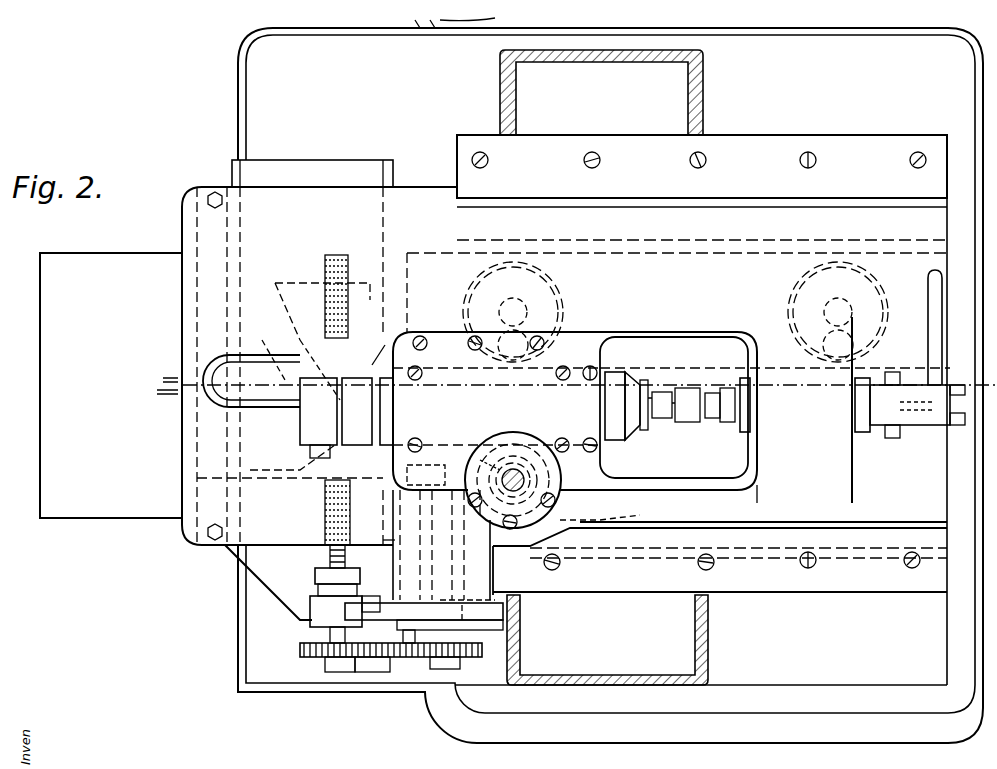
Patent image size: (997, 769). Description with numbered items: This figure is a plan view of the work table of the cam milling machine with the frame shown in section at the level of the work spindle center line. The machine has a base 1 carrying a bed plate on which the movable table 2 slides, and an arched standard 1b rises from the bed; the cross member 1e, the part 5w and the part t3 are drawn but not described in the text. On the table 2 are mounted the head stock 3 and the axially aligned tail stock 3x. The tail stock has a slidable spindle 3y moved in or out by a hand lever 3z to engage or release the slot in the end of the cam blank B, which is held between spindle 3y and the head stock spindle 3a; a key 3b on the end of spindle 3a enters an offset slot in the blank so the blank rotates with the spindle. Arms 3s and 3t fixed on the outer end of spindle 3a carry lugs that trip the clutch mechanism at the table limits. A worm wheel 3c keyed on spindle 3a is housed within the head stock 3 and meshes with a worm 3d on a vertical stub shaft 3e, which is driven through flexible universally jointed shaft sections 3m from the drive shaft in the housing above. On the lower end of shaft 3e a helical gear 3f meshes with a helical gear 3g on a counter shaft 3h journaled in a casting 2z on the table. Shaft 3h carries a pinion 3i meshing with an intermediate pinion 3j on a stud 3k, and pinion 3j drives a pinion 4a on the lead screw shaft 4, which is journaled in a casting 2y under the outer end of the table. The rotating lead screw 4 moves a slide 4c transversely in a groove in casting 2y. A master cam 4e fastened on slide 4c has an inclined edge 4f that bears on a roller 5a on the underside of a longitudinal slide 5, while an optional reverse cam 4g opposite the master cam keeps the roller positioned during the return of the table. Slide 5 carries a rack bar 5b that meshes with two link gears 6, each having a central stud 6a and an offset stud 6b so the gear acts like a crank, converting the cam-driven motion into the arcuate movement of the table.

The base 1 is at (610, 380).
The standard 1b is at (704, 72).
The cross bar 1e is at (677, 410).
The movable table 2 is at (165, 482).
The casting 2y is at (290, 602).
The casting 2z is at (393, 545).
The head stock 3 is at (568, 340).
The spindle 3a is at (660, 392).
The key 3b is at (683, 392).
The worm wheel 3c is at (575, 392).
The worm 3d is at (482, 458).
The vertical stub shaft 3e is at (525, 482).
The helical gear 3f is at (600, 514).
The helical gear 3g is at (421, 469).
The counter shaft 3h is at (468, 578).
The pinion 3i is at (470, 650).
The intermediate pinion 3j is at (405, 660).
The stud 3k is at (375, 674).
The flexible universally jointed shaft sections 3m is at (325, 530).
The arm 3s is at (387, 338).
The arm 3t is at (300, 415).
The tail stock 3x is at (804, 410).
The slidable spindle 3y is at (742, 432).
The hand lever 3z is at (940, 368).
The lead screw shaft 4 is at (340, 258).
The pinion 4a is at (300, 650).
The slide 4c is at (305, 163).
The master cam 4e is at (296, 283).
The inclined cam surface 4f is at (310, 350).
The reverse cam 4g is at (291, 459).
The slide 5 is at (212, 393).
The roller 5a is at (301, 362).
The rack bar 5b is at (610, 370).
The weight box 5w is at (42, 338).
The link gear 6 is at (558, 292).
The stud 6a is at (528, 312).
The stud 6b is at (499, 342).
The cam blank B is at (680, 422).
The tooth t3 is at (702, 422).